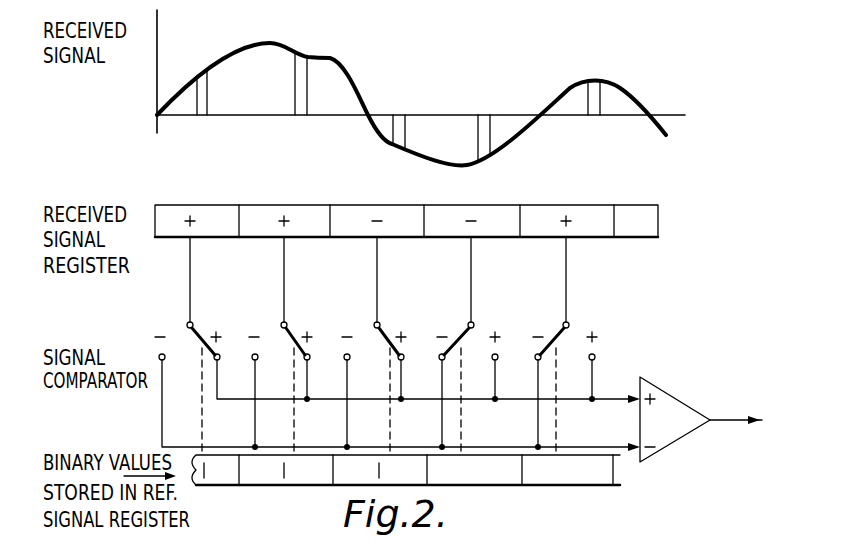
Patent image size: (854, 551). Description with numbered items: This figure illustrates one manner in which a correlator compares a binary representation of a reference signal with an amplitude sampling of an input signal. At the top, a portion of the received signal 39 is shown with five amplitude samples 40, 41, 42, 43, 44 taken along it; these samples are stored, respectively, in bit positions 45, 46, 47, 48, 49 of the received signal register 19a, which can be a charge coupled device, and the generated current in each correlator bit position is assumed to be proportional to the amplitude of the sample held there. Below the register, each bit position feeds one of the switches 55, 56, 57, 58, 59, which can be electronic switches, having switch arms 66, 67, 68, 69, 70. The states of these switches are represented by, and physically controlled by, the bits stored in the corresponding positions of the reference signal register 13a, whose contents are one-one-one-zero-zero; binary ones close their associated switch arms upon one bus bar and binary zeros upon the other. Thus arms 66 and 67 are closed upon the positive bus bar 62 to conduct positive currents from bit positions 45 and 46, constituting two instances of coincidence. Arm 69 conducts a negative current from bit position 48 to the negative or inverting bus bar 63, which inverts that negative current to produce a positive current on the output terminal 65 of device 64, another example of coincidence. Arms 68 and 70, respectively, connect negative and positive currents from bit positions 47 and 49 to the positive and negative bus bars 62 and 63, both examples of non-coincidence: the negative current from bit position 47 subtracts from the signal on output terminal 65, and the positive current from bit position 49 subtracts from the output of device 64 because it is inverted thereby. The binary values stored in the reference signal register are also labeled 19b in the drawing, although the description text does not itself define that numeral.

The received signal 39 is at (652, 83).
The amplitude sample 40 is at (208, 102).
The amplitude sample 41 is at (307, 100).
The amplitude sample 42 is at (405, 133).
The amplitude sample 43 is at (491, 133).
The amplitude sample 44 is at (600, 103).
The received signal register 19a is at (655, 192).
The bit position 45 is at (195, 203).
The bit position 46 is at (284, 203).
The bit position 47 is at (377, 203).
The bit position 48 is at (488, 203).
The bit position 49 is at (578, 203).
The switch arm 66 is at (199, 343).
The switch arm 67 is at (292, 343).
The switch arm 68 is at (385, 343).
The switch arm 69 is at (479, 343).
The switch arm 70 is at (574, 343).
The switch 55 is at (191, 358).
The switch 56 is at (277, 362).
The switch 57 is at (375, 360).
The switch 58 is at (478, 360).
The switch 59 is at (570, 360).
The positive bus bar 62 is at (613, 397).
The negative or inverting bus bar 63 is at (622, 450).
The device 64 is at (673, 394).
The output terminal 65 is at (728, 412).
The reference signal register 13a is at (633, 492).
The reference signal register 19b is at (418, 518).